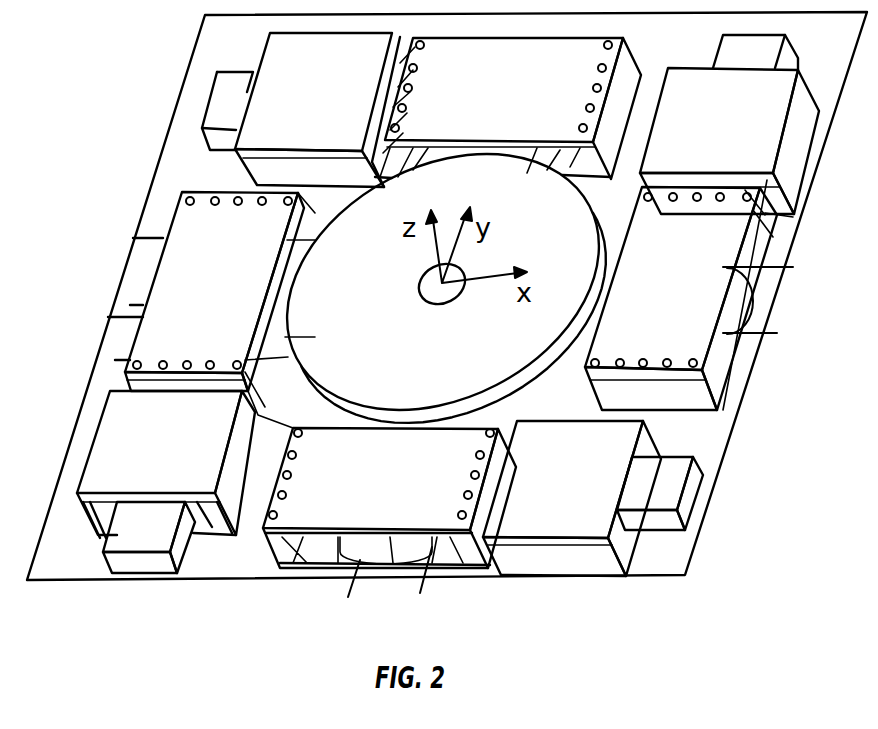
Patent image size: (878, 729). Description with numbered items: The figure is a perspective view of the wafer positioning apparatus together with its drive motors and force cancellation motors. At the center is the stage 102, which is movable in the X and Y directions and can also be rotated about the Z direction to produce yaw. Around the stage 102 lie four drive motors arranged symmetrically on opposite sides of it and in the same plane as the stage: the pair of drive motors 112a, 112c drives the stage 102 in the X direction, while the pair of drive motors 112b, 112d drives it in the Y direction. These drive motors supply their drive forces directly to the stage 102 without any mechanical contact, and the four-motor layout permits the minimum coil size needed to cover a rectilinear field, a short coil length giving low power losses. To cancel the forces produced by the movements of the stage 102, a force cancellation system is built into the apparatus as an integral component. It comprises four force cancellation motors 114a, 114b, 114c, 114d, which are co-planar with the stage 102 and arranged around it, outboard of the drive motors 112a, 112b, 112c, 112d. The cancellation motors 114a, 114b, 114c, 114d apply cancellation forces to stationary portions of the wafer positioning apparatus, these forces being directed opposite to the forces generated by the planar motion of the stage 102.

The stage 102 is at (452, 387).
The drive motor 112a is at (697, 349).
The drive motor 112b is at (564, 132).
The drive motor 112c is at (235, 352).
The drive motor 112d is at (450, 518).
The force cancellation motor 114a is at (763, 167).
The force cancellation motor 114b is at (349, 144).
The force cancellation motor 114c is at (203, 487).
The force cancellation motor 114d is at (597, 528).